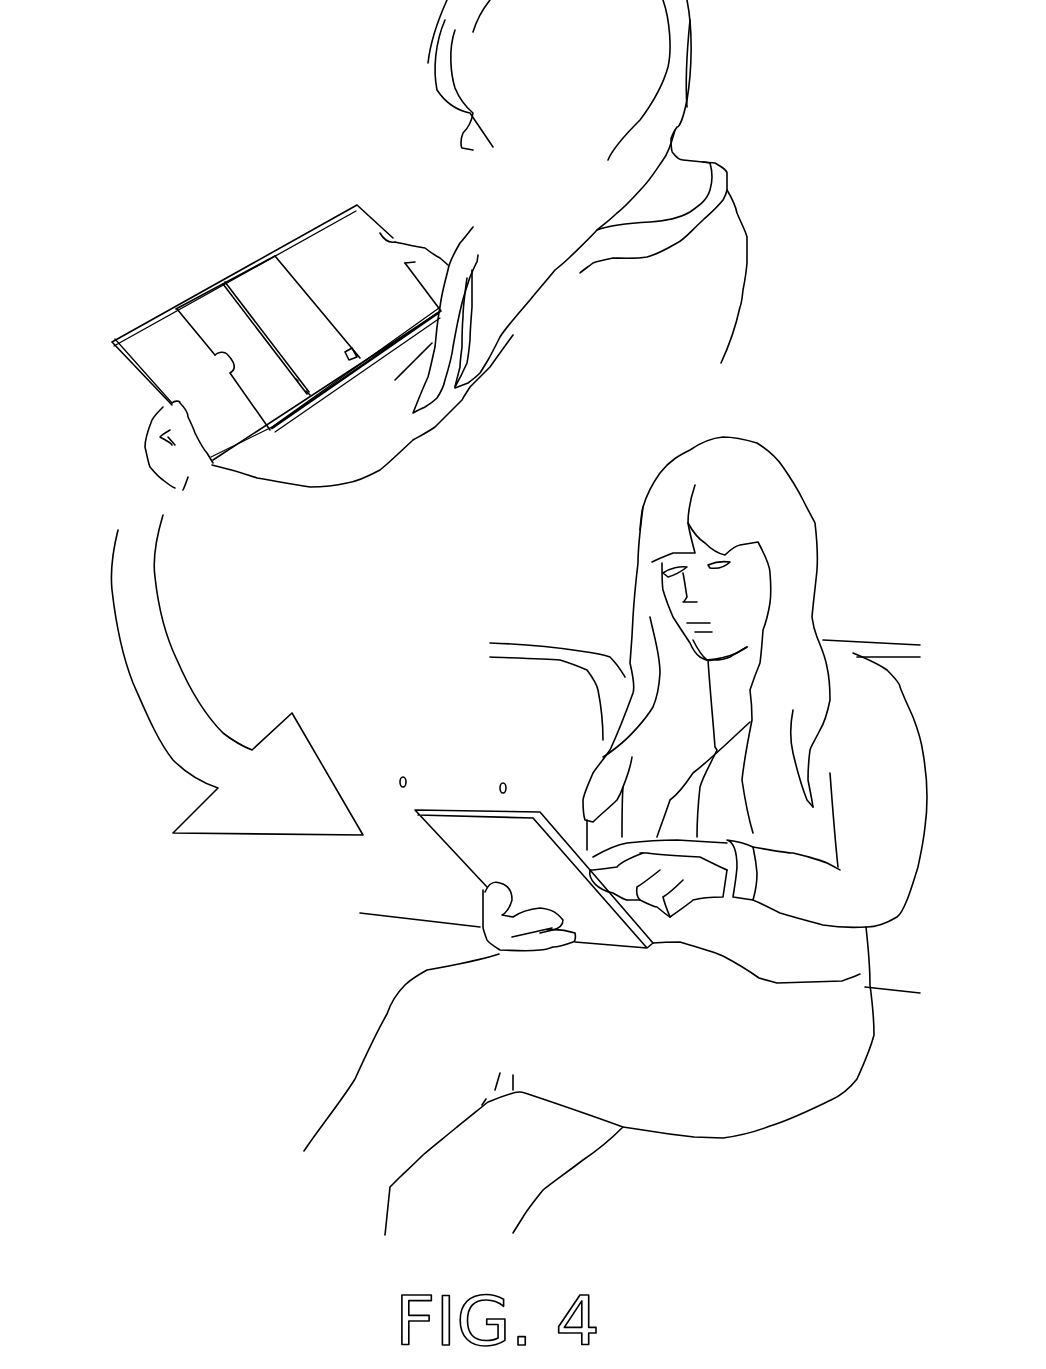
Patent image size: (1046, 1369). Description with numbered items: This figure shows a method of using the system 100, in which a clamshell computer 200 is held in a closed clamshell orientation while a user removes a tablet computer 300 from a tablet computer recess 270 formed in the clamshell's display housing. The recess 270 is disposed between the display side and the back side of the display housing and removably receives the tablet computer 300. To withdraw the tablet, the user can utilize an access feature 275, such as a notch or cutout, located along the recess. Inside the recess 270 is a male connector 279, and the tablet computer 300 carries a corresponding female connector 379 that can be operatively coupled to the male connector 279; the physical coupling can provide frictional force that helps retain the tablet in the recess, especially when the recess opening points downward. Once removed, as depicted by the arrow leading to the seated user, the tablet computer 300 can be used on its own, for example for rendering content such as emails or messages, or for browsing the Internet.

The system 100 is at (362, 560).
The clamshell computer 200 is at (239, 303).
The tablet computer recess 270 is at (313, 296).
The male connector 279 is at (350, 349).
The access feature 275 is at (213, 354).
The tablet computer 300 is at (145, 387).
The female connector 379 is at (308, 394).